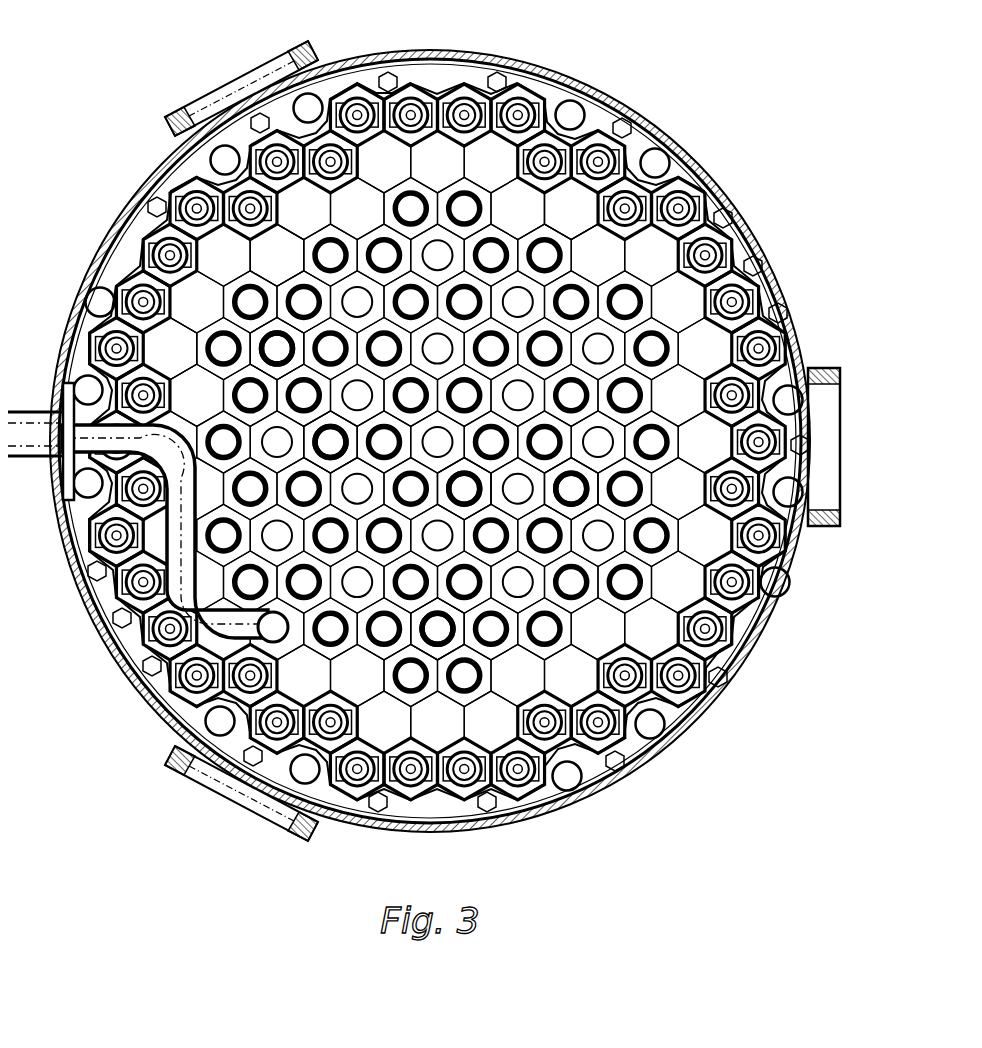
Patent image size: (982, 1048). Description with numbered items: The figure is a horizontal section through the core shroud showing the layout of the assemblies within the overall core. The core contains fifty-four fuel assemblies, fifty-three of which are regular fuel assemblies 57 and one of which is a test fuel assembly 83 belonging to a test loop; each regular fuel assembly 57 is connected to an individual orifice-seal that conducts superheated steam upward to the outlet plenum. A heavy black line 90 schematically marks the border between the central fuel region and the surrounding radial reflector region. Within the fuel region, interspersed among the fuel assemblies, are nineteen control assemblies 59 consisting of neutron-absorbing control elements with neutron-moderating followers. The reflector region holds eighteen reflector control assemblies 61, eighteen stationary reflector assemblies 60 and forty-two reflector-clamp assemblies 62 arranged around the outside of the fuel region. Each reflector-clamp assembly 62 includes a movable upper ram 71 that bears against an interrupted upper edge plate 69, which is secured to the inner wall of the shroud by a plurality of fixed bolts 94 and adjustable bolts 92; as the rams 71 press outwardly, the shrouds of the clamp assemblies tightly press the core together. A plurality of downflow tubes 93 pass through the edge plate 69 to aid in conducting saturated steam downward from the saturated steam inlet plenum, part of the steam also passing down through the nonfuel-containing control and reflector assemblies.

The regular fuel assembly 57 is at (341, 451).
The control assembly 59 is at (288, 357).
The stationary reflector assembly 60 is at (562, 222).
The reflector control assembly 61 is at (267, 271).
The reflector-clamp assembly 62 is at (520, 160).
The upper edge plate 69 is at (345, 822).
The upper ram 71 is at (253, 147).
The test fuel assembly 83 is at (473, 501).
The heavy black line 90 is at (665, 563).
The adjustable bolt 92 is at (518, 67).
The downflow tube 93 is at (648, 140).
The fixed bolt 94 is at (405, 56).